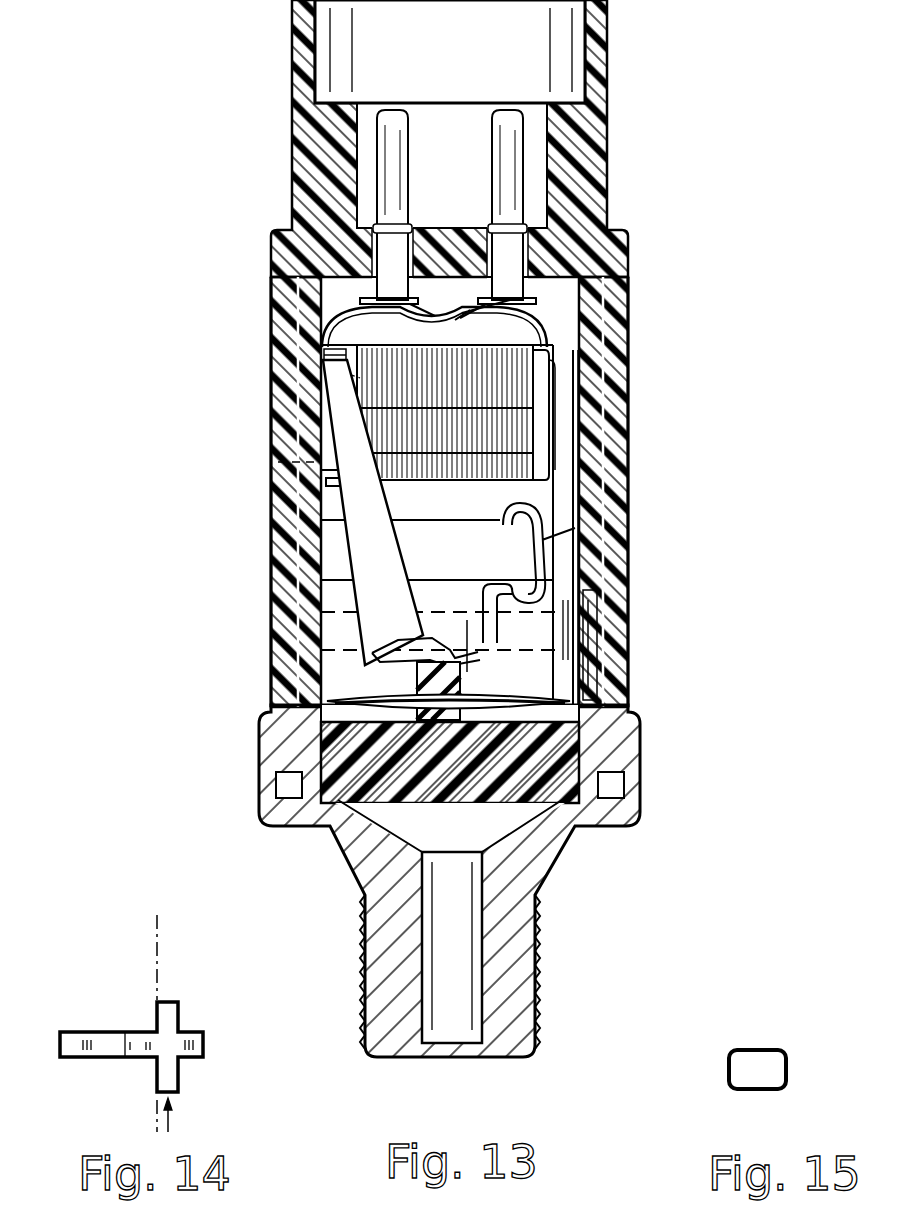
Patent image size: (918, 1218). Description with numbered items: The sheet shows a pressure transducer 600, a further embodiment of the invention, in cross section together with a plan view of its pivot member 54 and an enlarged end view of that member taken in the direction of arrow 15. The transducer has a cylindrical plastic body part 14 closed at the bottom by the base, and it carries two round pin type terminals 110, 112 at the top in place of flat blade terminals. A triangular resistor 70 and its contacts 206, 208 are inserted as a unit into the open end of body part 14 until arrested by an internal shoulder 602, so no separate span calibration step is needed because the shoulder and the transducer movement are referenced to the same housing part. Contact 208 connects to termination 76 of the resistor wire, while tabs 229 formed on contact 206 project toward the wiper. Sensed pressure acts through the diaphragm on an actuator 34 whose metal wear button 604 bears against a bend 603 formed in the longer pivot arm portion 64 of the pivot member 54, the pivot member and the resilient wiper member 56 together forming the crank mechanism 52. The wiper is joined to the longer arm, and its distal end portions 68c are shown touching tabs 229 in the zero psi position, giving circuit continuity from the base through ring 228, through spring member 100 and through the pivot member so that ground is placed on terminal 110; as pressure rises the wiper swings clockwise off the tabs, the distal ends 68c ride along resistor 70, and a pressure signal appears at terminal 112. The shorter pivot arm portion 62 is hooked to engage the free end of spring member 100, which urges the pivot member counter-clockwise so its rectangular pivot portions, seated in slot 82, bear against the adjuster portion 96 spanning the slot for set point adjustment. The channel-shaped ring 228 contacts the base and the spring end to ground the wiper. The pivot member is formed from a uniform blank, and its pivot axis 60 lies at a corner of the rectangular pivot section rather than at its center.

In FIG. 13, the transducer 600 is at (610, 40).
In FIG. 13, the cylindrical plastic body part 14 is at (612, 420).
In FIG. 13, the actuator 34 is at (345, 830).
In FIG. 13, the ring 228 is at (625, 778).
In FIG. 13, the terminal 110 is at (385, 150).
In FIG. 13, the terminal 112 is at (508, 145).
In FIG. 13, the contact 206 is at (332, 333).
In FIG. 13, the contact 208 is at (560, 295).
In FIG. 13, the resistor 70 is at (448, 347).
In FIG. 13, the termination 76 is at (556, 360).
In FIG. 13, the internal shoulder 602 is at (575, 447).
In FIG. 13, the bend 603 is at (545, 640).
In FIG. 13, the distal end portions 68c is at (330, 381).
In FIG. 13, the tabs 229 is at (278, 463).
In FIG. 13, the wiper member 56 is at (372, 512).
In FIG. 13, the spring member 100 is at (558, 540).
In FIG. 13, the crank mechanism 52 is at (483, 600).
In FIG. 13, the pivot member 54 is at (386, 645).
In FIG. 14, the pivot member 54 is at (178, 1004).
In FIG. 15, the pivot member 54 is at (784, 1050).
In FIG. 13, the portion of adjuster 96 is at (605, 598).
In FIG. 13, the slot 82 is at (478, 667).
In FIG. 13, the metal wear button 604 is at (595, 597).
In FIG. 14, the pivot axis 60 is at (160, 942).
In FIG. 14, the shorter pivot arm portion 62 is at (200, 1045).
In FIG. 14, the longer pivot arm portion 64 is at (100, 1046).
In FIG. 14, the arrow 15 is at (172, 1115).